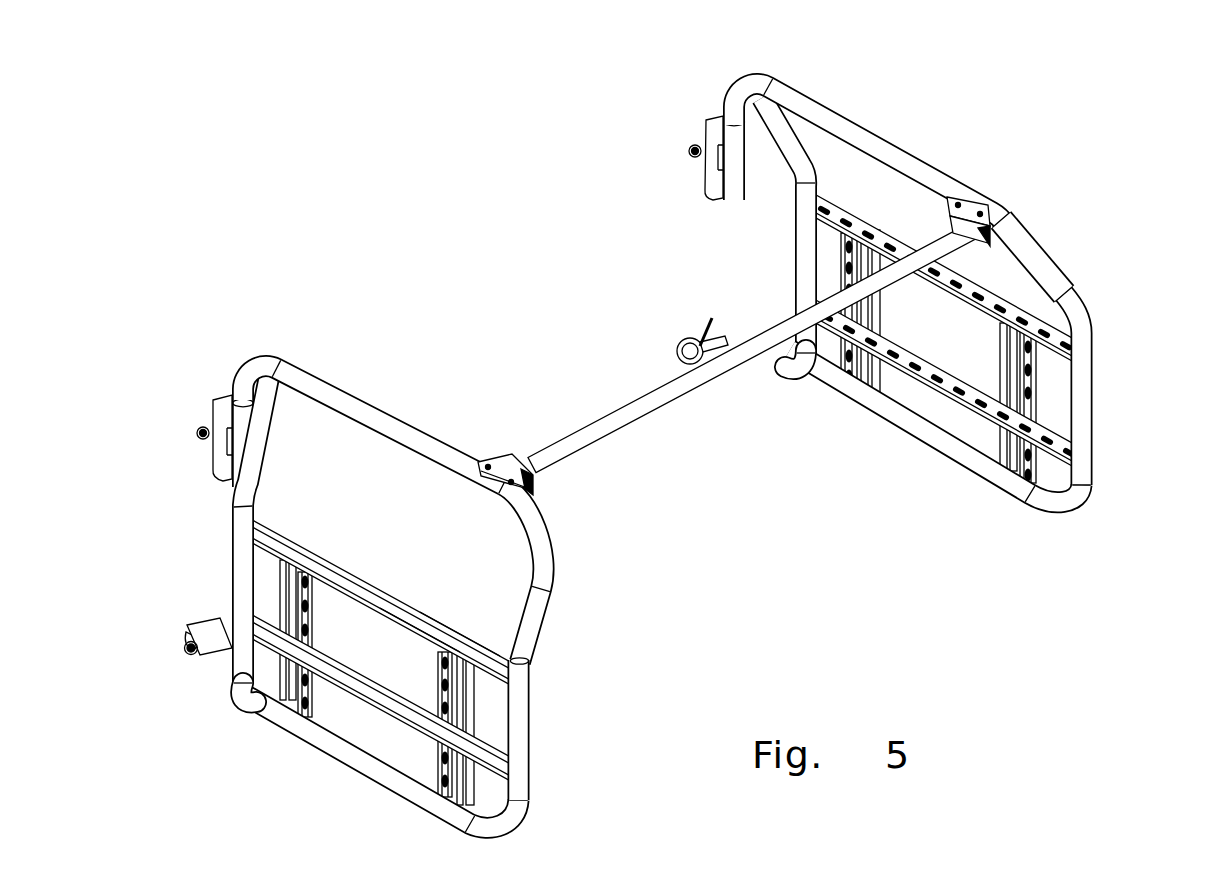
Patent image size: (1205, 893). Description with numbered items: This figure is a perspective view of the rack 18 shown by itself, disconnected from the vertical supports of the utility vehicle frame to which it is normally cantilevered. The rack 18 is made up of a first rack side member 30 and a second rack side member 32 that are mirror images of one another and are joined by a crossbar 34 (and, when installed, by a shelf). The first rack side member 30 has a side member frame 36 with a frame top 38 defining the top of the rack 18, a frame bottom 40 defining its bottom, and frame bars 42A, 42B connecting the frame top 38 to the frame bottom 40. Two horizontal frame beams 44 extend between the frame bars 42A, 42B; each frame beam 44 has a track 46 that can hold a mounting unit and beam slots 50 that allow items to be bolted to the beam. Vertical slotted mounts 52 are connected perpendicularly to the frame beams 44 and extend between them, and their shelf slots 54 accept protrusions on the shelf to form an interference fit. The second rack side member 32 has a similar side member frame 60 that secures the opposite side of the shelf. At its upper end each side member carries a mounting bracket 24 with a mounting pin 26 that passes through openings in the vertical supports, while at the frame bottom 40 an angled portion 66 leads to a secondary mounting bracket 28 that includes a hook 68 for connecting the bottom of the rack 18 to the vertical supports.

The rack 18 is at (957, 138).
The mounting bracket 24 is at (214, 427).
The mounting pin 26 is at (198, 436).
The secondary mounting bracket 28 is at (716, 320).
The first rack side member 30 is at (552, 769).
The second rack side member 32 is at (1108, 429).
The crossbar 34 is at (620, 410).
The side member frame 36 is at (546, 612).
The frame top 38 is at (375, 420).
The frame bottom 40 is at (360, 768).
The frame bar 42A is at (235, 553).
The frame bar 42B is at (532, 720).
The frame beam 44 is at (355, 566).
The track 46 is at (410, 608).
The beam slot 50 is at (490, 650).
The slotted mount 52 is at (300, 574).
The shelf slot 54 is at (313, 630).
The side member frame 60 is at (1073, 303).
The angled portion 66 is at (772, 366).
The hook 68 is at (687, 340).